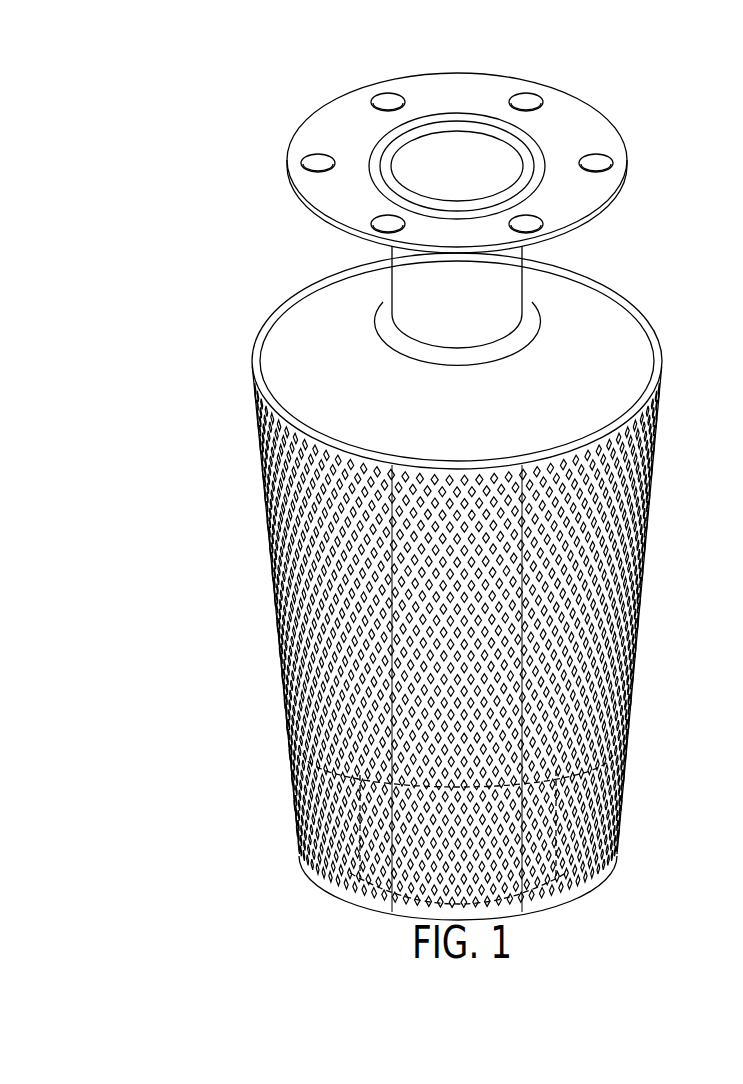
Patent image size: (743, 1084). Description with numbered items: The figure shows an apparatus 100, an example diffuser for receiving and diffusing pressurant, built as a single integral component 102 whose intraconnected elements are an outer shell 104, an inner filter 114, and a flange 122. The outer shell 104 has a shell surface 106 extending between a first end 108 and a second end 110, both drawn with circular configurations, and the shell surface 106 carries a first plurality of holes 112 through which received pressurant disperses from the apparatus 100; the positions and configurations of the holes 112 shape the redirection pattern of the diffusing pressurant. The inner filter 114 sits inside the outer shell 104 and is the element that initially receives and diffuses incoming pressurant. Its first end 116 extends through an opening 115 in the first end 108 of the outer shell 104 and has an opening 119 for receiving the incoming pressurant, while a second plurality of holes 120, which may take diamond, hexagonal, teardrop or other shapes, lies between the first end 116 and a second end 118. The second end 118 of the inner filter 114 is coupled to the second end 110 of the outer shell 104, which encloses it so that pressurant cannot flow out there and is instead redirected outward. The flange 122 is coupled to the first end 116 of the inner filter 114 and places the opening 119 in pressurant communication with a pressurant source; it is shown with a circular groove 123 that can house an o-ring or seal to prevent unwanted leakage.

The apparatus 100 is at (292, 117).
The integral component 102 is at (218, 394).
The outer shell 104 is at (261, 595).
The shell surface 106 is at (281, 709).
The first end 108 is at (645, 360).
The second end 110 is at (604, 885).
The first plurality of holes 112 is at (610, 556).
The inner filter 114 is at (526, 656).
The opening 115 is at (368, 311).
The first end 116 is at (517, 282).
The second end 118 is at (325, 886).
The opening 119 is at (458, 143).
The second plurality of holes 120 is at (478, 725).
The flange 122 is at (590, 124).
The groove 123 is at (535, 131).